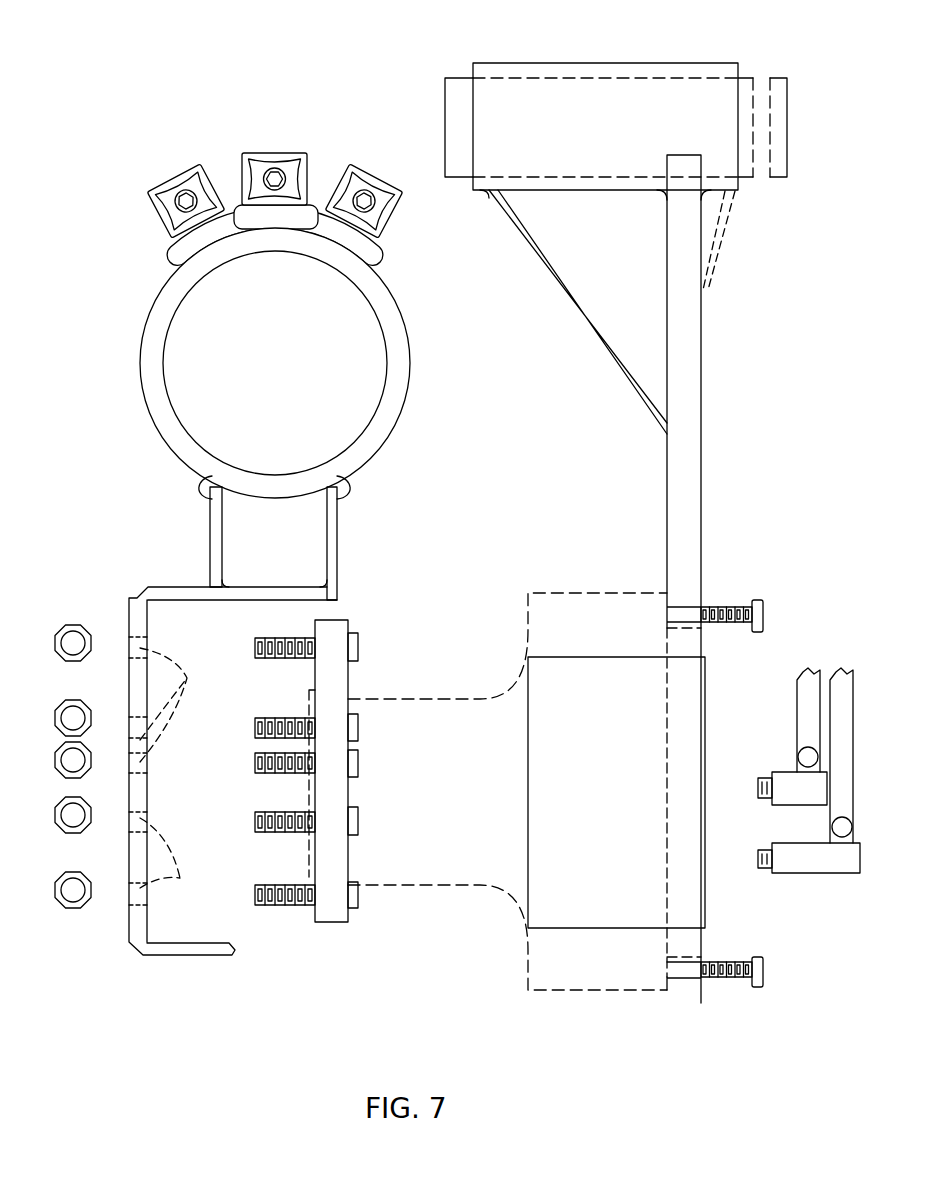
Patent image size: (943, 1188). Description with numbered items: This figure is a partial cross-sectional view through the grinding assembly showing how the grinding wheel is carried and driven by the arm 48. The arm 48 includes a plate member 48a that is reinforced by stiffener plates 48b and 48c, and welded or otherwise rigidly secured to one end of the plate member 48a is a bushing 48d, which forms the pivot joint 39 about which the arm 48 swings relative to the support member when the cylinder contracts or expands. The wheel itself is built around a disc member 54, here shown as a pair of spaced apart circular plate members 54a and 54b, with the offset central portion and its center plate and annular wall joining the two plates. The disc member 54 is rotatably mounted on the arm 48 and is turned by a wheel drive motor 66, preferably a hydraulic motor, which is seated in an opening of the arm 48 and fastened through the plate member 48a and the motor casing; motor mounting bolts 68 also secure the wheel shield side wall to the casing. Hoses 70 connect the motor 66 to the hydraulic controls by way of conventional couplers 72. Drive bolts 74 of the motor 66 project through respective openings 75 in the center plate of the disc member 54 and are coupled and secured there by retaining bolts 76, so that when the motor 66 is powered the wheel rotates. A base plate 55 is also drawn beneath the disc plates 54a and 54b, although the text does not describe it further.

The pivot joint 39 is at (753, 78).
The arm 48 is at (629, 501).
The plate member 48a is at (702, 508).
The stiffener plate 48b is at (612, 316).
The stiffener plate 48c is at (713, 220).
The bushing 48d is at (518, 62).
The disc member 54 is at (287, 540).
The circular plate member 54a is at (212, 530).
The circular plate member 54b is at (338, 565).
The base plate 55 is at (330, 603).
The wheel drive motor 66 is at (597, 572).
The motor mounting bolts 68 is at (735, 985).
The hoses 70 is at (843, 728).
The couplers 72 is at (812, 873).
The drive bolts 74 is at (360, 896).
The openings 75 is at (180, 880).
The retaining bolts 76 is at (55, 772).